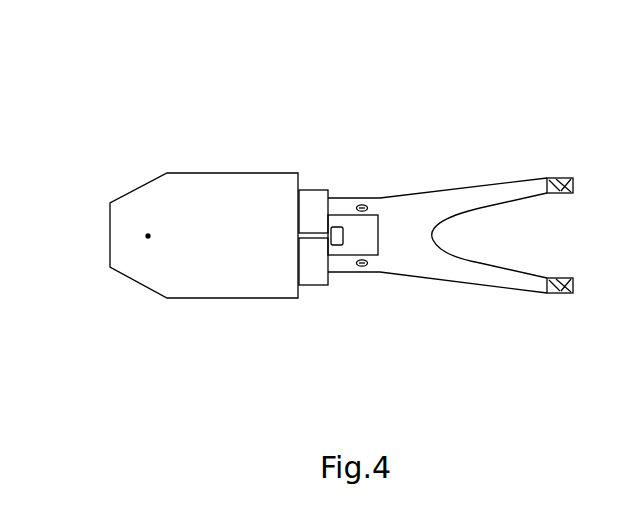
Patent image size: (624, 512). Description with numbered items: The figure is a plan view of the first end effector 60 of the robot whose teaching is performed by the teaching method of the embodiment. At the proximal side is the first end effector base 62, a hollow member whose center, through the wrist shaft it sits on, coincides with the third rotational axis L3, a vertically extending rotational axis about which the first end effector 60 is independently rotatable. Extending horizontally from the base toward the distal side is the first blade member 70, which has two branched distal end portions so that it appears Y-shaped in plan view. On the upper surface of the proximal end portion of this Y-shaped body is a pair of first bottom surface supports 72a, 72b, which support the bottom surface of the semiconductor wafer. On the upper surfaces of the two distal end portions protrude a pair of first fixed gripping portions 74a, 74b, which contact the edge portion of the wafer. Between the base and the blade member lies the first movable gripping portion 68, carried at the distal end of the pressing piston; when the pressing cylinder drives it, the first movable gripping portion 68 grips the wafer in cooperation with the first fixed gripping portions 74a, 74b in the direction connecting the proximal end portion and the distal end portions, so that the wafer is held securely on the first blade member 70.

The first end effector 60 is at (48, 46).
The first end effector base 62 is at (233, 172).
The third rotational axis L3 is at (150, 236).
The first movable gripping portion 68 is at (338, 214).
The first blade member 70 is at (432, 283).
The first bottom surface support 72a is at (363, 204).
The first bottom surface support 72b is at (362, 268).
The first fixed gripping portion 74a is at (546, 177).
The first fixed gripping portion 74b is at (545, 294).